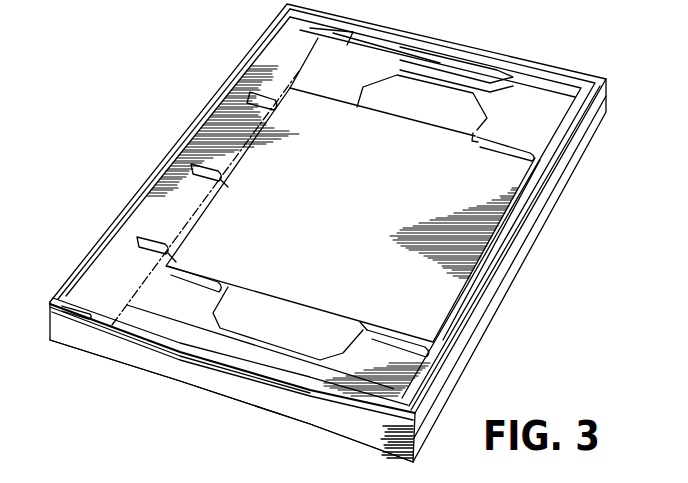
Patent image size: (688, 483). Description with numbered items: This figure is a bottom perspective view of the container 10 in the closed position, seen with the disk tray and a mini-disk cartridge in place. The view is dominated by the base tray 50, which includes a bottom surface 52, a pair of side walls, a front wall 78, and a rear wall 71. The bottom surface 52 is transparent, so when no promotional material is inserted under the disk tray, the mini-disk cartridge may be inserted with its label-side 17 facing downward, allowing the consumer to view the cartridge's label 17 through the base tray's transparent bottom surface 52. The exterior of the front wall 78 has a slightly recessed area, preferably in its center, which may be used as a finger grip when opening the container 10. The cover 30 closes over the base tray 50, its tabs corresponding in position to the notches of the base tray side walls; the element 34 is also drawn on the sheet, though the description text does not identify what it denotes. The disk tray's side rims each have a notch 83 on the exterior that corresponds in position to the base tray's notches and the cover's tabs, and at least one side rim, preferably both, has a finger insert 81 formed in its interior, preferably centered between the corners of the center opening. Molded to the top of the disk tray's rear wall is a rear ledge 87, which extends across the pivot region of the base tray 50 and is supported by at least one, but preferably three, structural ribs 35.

The container 10 is at (102, 74).
The label-side of the mini-disk cartridge 17 is at (456, 278).
The cover 30 is at (138, 358).
The front wall 34 is at (279, 407).
The structural ribs 35 is at (150, 236).
The base tray 50 is at (556, 95).
The bottom surface 52 is at (357, 209).
The rear wall 71 is at (186, 130).
The front wall 78 is at (548, 192).
The finger insert 81 is at (443, 90).
The notch 83 is at (498, 70).
The rear ledge 87 is at (263, 80).